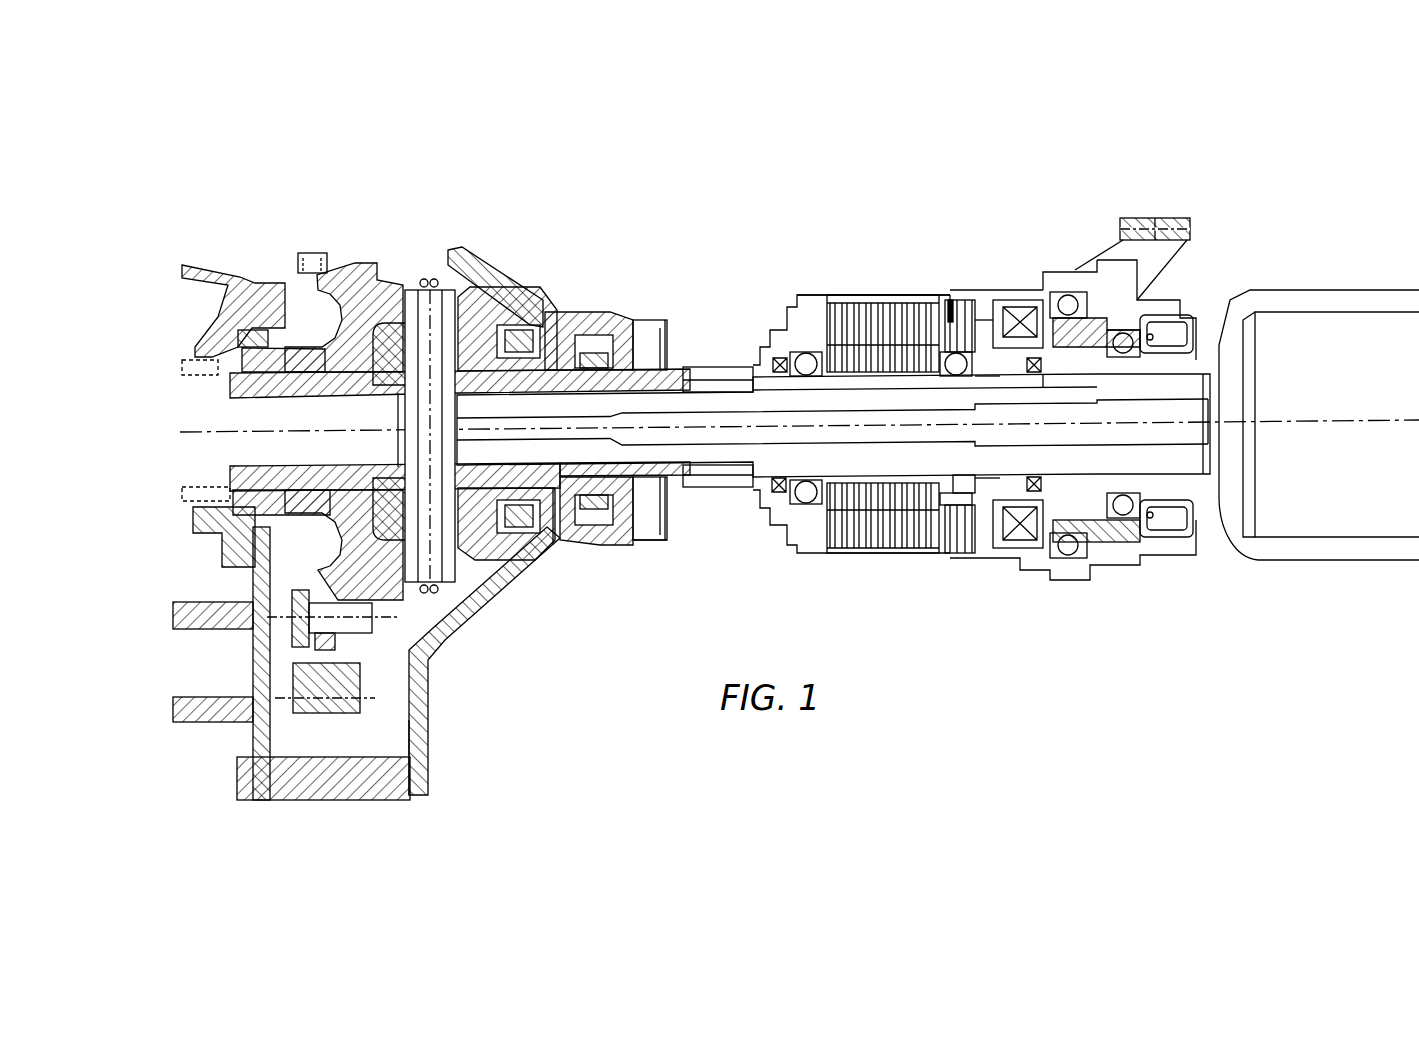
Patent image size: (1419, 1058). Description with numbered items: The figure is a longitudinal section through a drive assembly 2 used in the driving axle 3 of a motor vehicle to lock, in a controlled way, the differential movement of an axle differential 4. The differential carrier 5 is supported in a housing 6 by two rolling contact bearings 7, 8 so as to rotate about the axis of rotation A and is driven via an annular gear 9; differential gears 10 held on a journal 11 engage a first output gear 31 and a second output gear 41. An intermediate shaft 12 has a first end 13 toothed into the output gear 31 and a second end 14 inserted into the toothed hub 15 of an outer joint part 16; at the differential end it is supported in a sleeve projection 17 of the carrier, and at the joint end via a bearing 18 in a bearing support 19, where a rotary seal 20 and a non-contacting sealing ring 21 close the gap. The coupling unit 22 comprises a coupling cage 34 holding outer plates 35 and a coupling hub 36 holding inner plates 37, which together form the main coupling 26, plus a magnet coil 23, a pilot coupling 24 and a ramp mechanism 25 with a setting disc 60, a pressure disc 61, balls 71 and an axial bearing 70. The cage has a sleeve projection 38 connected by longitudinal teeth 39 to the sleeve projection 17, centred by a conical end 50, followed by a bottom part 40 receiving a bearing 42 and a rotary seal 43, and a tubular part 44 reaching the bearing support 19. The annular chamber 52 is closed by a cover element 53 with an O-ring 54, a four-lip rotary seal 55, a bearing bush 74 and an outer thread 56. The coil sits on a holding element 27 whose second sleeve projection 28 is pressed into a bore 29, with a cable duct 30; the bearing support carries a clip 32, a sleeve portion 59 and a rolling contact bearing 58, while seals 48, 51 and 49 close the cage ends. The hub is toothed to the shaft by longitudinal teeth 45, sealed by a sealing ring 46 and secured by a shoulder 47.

The drive assembly 2 is at (735, 198).
The driving axle 3 is at (150, 410).
The axle differential 4 is at (440, 224).
The differential carrier 5 is at (490, 323).
The housing 6 is at (540, 303).
The rolling contact bearing 7 is at (600, 340).
The rolling contact bearing 8 is at (255, 328).
The annular gear 9 is at (325, 673).
The differential gears 10 is at (468, 545).
The journal 11 is at (440, 598).
The intermediate shaft 12 is at (600, 510).
The first end 13 is at (567, 333).
The second end 14 is at (1173, 460).
The toothed hub 15 is at (1173, 368).
The outer joint part 16 is at (1316, 300).
The sleeve projection 17 is at (630, 500).
The bearing 18 is at (1125, 520).
The bearing support 19 is at (1105, 300).
The rotary seal 20 is at (1155, 535).
The sealing ring 21 is at (1192, 537).
The coupling unit 22 is at (885, 238).
The magnet coil 23 is at (1020, 307).
The pilot coupling 24 is at (970, 303).
The ramp mechanism 25 is at (950, 300).
The main coupling 26 is at (913, 290).
The holding element 27 is at (1052, 292).
The second sleeve projection 28 is at (1053, 380).
The bore 29 is at (1050, 492).
The cable duct 30 is at (1080, 500).
The first output gear 31 is at (517, 520).
The holding arm or clip 32 is at (1150, 265).
The coupling cage 34 is at (817, 295).
The outer plates 35 is at (845, 305).
The coupling hub 36 is at (827, 380).
The inner plates 37 is at (862, 365).
The sleeve projection 38 is at (722, 370).
The longitudinal teeth 39 is at (682, 367).
The bottom part 40 is at (790, 325).
The second output gear 41 is at (350, 320).
The bearing 42 is at (795, 520).
The rotary seal 43 is at (770, 495).
The tubular part 44 is at (905, 555).
The longitudinal teeth 45 is at (908, 385).
The sealing ring 46 is at (1000, 375).
The shoulder 47 is at (805, 466).
The rotary seal 48 is at (662, 540).
The rotary seal 49 is at (1045, 580).
The conical end 50 is at (633, 367).
The annular seal 51 is at (672, 520).
The annular chamber 52 is at (858, 553).
The cover element 53 is at (998, 300).
The O-ring 54 is at (985, 558).
The rotary seal 55 is at (1030, 475).
The outer thread 56 is at (1032, 292).
The rolling contact bearing 58 is at (1075, 292).
The sleeve portion 59 is at (955, 553).
The setting disc 60 is at (960, 476).
The pressure disc 61 is at (938, 530).
The axial bearing 70 is at (985, 378).
The ball 71 is at (947, 378).
The bearing bush 74 is at (1000, 477).
The axis of rotation A is at (553, 470).